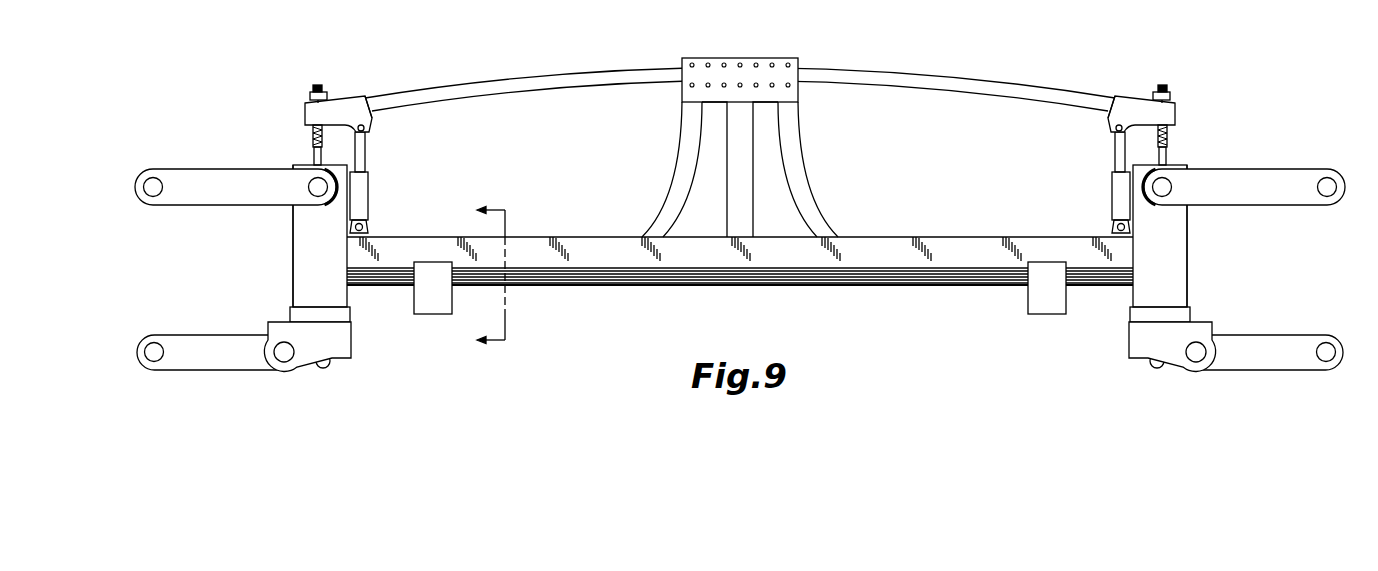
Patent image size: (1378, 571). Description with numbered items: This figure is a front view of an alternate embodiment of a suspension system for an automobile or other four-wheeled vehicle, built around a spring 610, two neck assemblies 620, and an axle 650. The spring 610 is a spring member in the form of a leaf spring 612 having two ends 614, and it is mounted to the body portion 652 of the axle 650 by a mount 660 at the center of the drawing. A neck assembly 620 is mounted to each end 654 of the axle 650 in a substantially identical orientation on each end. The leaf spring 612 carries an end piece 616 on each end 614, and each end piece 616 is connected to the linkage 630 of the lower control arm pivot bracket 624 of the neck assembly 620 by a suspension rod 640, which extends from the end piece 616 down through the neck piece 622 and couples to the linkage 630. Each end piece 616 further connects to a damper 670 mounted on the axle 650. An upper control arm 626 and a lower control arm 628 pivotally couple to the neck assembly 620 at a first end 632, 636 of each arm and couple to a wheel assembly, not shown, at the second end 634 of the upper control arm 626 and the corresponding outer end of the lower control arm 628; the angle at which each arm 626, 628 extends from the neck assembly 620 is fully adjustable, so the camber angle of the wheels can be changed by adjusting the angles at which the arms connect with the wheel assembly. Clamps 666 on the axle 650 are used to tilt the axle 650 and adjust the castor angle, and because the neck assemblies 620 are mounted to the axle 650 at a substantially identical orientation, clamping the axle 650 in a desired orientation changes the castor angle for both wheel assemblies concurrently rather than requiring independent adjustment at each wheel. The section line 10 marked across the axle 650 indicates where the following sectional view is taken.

The spring 610 is at (822, 72).
The leaf spring 612 is at (548, 78).
The end 614 is at (378, 96).
The end piece 616 is at (350, 100).
The neck assembly 620 is at (295, 262).
The neck piece 622 is at (305, 230).
The lower control arm pivot bracket 624 is at (340, 345).
The upper control arm 626 is at (220, 170).
The lower control arm 628 is at (210, 362).
The linkage 630 is at (318, 369).
The first end of upper control arm 632 is at (305, 185).
The second end of upper control arm 634 is at (152, 178).
The first end of lower control arm 636 is at (262, 342).
The suspension rod 640 is at (313, 150).
The axle 650 is at (752, 286).
The body portion 652 is at (640, 280).
The end of axle 654 is at (367, 270).
The mount 660 is at (805, 175).
The clamp 666 is at (434, 308).
The damper 670 is at (365, 194).
The section line 10 is at (504, 278).